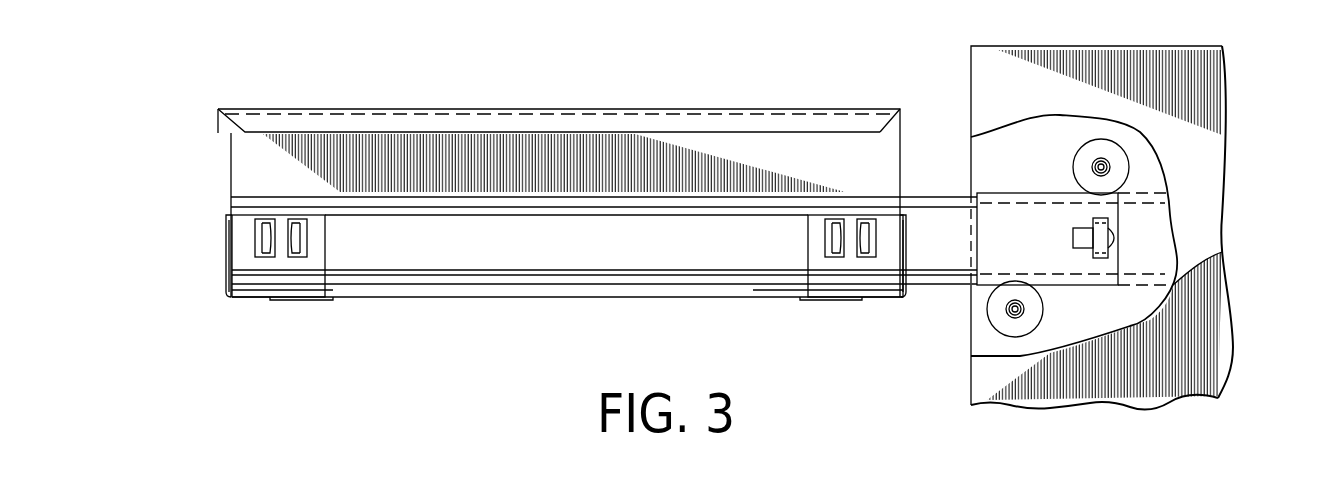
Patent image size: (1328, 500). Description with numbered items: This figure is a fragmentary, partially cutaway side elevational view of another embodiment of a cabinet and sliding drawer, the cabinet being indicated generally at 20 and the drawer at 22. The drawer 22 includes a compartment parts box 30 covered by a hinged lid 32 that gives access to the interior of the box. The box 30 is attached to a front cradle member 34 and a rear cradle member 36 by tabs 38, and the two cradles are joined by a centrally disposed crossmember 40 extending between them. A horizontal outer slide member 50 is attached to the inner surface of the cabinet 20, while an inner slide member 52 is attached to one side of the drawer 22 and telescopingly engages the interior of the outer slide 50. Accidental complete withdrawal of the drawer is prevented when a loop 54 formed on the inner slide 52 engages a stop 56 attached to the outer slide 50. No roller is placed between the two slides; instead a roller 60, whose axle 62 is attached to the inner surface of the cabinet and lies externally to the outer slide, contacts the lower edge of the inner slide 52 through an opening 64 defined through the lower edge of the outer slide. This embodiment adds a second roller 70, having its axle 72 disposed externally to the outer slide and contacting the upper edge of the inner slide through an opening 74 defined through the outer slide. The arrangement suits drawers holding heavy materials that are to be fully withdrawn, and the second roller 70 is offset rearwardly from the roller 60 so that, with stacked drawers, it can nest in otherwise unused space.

The cabinet 20 is at (916, 370).
The drawer 22 is at (380, 344).
The compartment parts box 30 is at (775, 162).
The hinged lid 32 is at (723, 123).
The front cradle member 34 is at (240, 248).
The rear cradle member 36 is at (885, 258).
The tabs 38 is at (258, 233).
The crossmember 40 is at (562, 293).
The outer slide member 50 is at (1159, 235).
The inner slide member 52 is at (440, 253).
The loop 54 is at (1098, 252).
The stop 56 is at (1081, 240).
The roller 60 is at (1012, 328).
The axle 62 is at (1005, 310).
The opening 64 is at (1007, 276).
The second roller 70 is at (1117, 160).
The axle 72 is at (1101, 167).
The opening 74 is at (1088, 200).